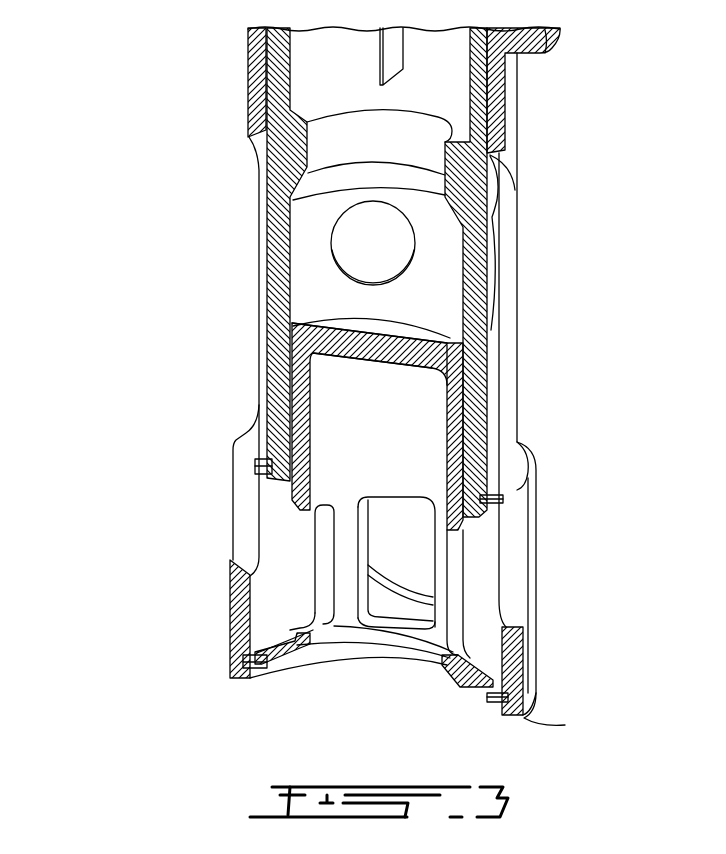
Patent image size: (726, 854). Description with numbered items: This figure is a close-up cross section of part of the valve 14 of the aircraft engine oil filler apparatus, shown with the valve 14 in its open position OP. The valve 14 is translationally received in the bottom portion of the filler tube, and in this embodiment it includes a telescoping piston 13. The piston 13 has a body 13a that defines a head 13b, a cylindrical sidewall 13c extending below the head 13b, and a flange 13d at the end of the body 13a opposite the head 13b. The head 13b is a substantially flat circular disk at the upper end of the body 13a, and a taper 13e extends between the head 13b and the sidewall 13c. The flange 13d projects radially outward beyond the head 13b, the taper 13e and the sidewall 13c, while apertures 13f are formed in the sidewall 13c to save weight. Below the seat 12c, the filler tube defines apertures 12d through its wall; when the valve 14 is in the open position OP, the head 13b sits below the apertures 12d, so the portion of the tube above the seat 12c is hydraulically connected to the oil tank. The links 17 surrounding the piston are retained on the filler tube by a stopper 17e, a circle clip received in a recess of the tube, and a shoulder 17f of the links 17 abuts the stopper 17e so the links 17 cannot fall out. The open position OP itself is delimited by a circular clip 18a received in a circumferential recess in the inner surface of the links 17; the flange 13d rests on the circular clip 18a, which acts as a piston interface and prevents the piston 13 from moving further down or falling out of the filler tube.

The valve 14 is at (225, 328).
The links 17 is at (515, 215).
The stopper 17e is at (502, 492).
The shoulder 17f is at (508, 472).
The open position OP is at (228, 460).
The seat 12c is at (422, 132).
The apertures 12d is at (355, 240).
The telescoping piston 13 is at (293, 410).
The body 13a is at (331, 578).
The head 13b is at (410, 322).
The cylindrical sidewall 13c is at (465, 431).
The flange 13d is at (489, 656).
The taper 13e is at (457, 343).
The apertures 13f is at (437, 567).
The circular clip 18a is at (519, 716).